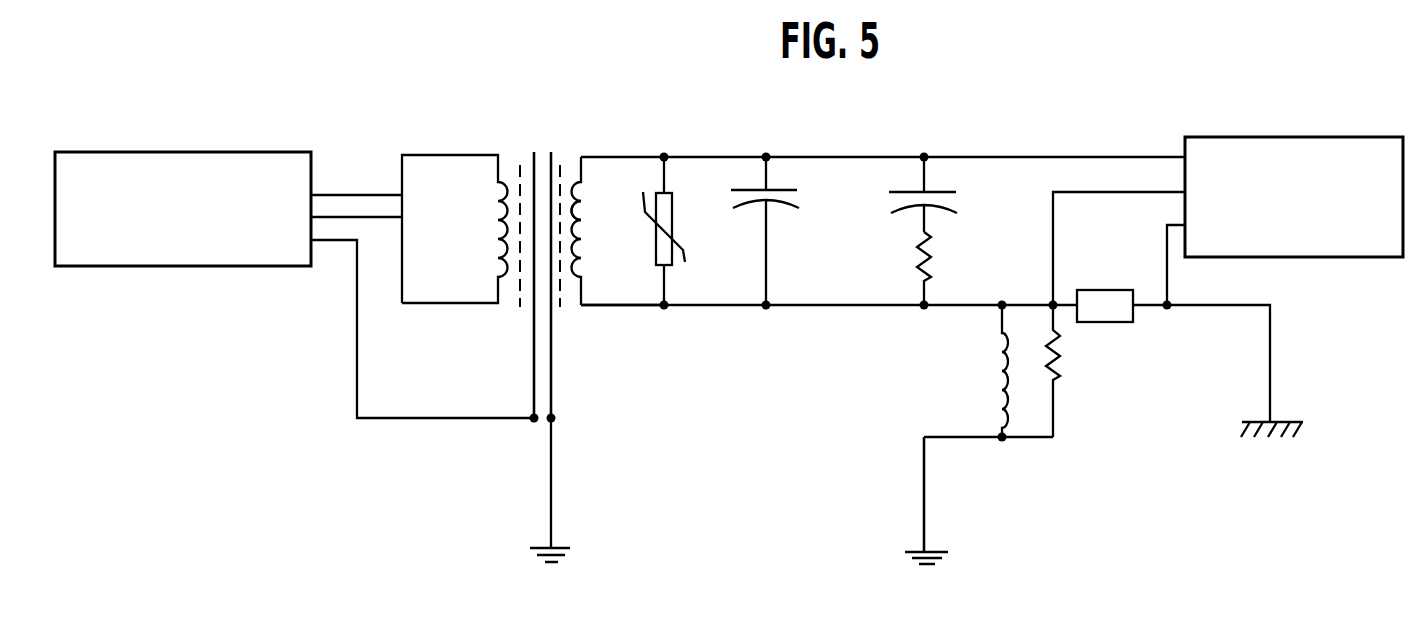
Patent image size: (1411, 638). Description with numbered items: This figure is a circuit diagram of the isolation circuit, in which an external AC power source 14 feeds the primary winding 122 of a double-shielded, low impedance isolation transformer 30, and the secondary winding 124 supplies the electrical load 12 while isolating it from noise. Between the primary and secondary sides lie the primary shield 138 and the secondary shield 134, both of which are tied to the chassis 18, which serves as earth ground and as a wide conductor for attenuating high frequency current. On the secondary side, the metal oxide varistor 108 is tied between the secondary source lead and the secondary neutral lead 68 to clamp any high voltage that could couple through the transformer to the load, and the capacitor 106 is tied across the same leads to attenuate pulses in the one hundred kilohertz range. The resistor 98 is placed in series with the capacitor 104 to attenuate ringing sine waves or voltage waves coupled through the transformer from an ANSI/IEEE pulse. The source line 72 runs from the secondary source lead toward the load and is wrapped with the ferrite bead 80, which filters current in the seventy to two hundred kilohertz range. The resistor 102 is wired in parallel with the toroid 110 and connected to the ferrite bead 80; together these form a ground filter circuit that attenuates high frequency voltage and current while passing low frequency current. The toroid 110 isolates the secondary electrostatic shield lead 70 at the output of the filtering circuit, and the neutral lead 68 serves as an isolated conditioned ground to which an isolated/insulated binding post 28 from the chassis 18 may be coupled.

The external AC power source 14 is at (174, 153).
The electrical load 12 is at (1237, 137).
The primary winding 122 is at (495, 192).
The isolation transformer 30 is at (543, 142).
The secondary neutral lead 68 is at (590, 157).
The secondary winding 124 is at (581, 212).
The metal oxide varistor 108 is at (673, 265).
The capacitor 106 is at (781, 188).
The capacitor 104 is at (941, 190).
The resistor 98 is at (917, 247).
The secondary electrostatic shield lead 70 is at (617, 305).
The toroid 110 is at (995, 363).
The resistor 102 is at (1060, 360).
The ferrite bead 80 is at (1098, 322).
The isolated/insulated binding post 28 is at (1270, 382).
The secondary shield 134 is at (551, 368).
The primary shield 138 is at (534, 368).
The chassis 18 is at (568, 547).
The source line 72 is at (924, 468).